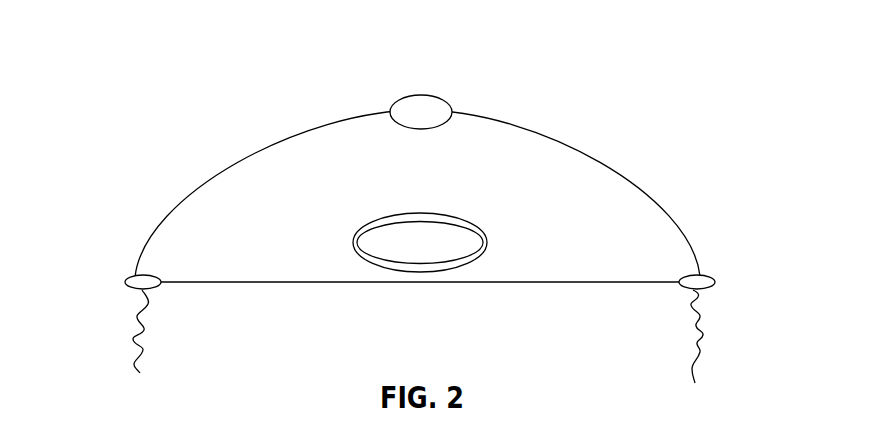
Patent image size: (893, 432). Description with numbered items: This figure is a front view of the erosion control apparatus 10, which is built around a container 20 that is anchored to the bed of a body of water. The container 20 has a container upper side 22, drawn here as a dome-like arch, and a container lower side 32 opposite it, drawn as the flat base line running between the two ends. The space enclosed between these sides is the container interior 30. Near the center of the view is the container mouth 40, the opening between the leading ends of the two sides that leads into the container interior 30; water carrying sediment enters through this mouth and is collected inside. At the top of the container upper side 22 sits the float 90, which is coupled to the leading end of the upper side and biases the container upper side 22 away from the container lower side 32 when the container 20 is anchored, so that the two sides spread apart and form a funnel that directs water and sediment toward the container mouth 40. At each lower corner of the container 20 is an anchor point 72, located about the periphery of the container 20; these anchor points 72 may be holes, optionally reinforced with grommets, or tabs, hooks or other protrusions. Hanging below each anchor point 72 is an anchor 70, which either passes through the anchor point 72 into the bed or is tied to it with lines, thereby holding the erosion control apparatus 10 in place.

The erosion control apparatus 10 is at (122, 36).
The container 20 is at (198, 157).
The container upper side 22 is at (597, 149).
The container interior 30 is at (563, 203).
The container lower side 32 is at (549, 284).
The container mouth 40 is at (381, 214).
The anchors 70 is at (132, 338).
The anchor points 72 is at (127, 281).
The float 90 is at (419, 95).